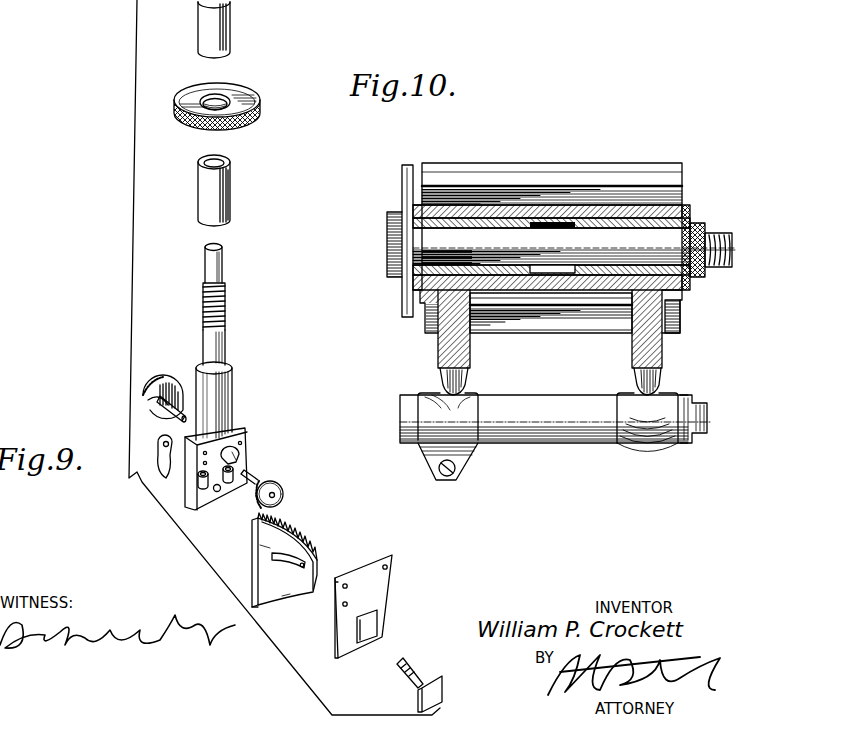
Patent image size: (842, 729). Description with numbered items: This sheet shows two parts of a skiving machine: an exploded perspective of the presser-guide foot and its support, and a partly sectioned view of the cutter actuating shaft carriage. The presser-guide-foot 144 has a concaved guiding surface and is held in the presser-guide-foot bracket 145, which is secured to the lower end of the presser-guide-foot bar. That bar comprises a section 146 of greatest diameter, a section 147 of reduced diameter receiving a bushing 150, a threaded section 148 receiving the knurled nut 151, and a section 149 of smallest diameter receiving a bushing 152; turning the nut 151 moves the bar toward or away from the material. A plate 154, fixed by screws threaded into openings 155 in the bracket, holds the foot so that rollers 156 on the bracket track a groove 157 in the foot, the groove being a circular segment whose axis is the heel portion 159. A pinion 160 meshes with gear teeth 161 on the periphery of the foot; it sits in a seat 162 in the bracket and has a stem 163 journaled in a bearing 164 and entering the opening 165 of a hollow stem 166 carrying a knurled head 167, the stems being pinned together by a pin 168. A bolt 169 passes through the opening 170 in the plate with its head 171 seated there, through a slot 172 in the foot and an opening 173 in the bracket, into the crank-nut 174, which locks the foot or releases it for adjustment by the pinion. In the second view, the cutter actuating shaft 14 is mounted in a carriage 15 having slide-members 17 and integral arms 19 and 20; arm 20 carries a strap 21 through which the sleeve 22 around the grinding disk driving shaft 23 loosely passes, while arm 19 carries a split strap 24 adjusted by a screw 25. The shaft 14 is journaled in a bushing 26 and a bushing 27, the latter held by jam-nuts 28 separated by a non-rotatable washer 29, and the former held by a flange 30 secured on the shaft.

In FIG. 10, the cutter actuating shaft 14 is at (574, 247).
In FIG. 10, the carriage 15 is at (545, 284).
In FIG. 10, the slide-members 17 is at (542, 172).
In FIG. 10, the arm 19 is at (440, 342).
In FIG. 10, the arm 20 is at (634, 345).
In FIG. 10, the strap 21 is at (642, 450).
In FIG. 10, the sleeve 22 is at (562, 428).
In FIG. 10, the grinding disk driving shaft 23 is at (702, 405).
In FIG. 10, the split strap 24 is at (470, 413).
In FIG. 10, the screw 25 is at (457, 472).
In FIG. 10, the bushing 26 is at (461, 232).
In FIG. 10, the bushing 27 is at (595, 230).
In FIG. 10, the jam-nuts 28 is at (713, 232).
In FIG. 10, the non-rotatable washer 29 is at (714, 280).
In FIG. 10, the flange 30 is at (408, 153).
In FIG. 9, the presser-guide-foot 144 is at (318, 550).
In FIG. 9, the presser-guide-foot bracket 145 is at (233, 426).
In FIG. 9, the section of greatest diameter 146 is at (234, 383).
In FIG. 9, the section of reduced diameter 147 is at (226, 340).
In FIG. 9, the threaded section 148 is at (226, 296).
In FIG. 9, the section of smallest diameter 149 is at (220, 264).
In FIG. 9, the bushing 150 is at (231, 174).
In FIG. 9, the knurled nut 151 is at (259, 112).
In FIG. 9, the bushing 152 is at (231, 22).
In FIG. 9, the plate 154 is at (388, 581).
In FIG. 9, the openings 155 is at (243, 442).
In FIG. 9, the rollers 156 is at (227, 480).
In FIG. 9, the groove 157 is at (252, 536).
In FIG. 9, the heel portion 159 is at (250, 598).
In FIG. 9, the pinion 160 is at (283, 495).
In FIG. 9, the gear teeth 161 is at (290, 531).
In FIG. 9, the seat 162 is at (237, 472).
In FIG. 9, the stem 163 is at (259, 479).
In FIG. 9, the bearing 164 is at (244, 452).
In FIG. 9, the opening 165 is at (181, 422).
In FIG. 9, the hollow stem 166 is at (156, 395).
In FIG. 9, the knurled head 167 is at (165, 377).
In FIG. 9, the pin 168 is at (165, 415).
In FIG. 9, the bolt 169 is at (410, 670).
In FIG. 9, the opening 170 is at (372, 620).
In FIG. 9, the head 171 is at (442, 686).
In FIG. 9, the slot 172 is at (305, 562).
In FIG. 9, the opening 173 is at (219, 492).
In FIG. 9, the crank-nut 174 is at (155, 450).